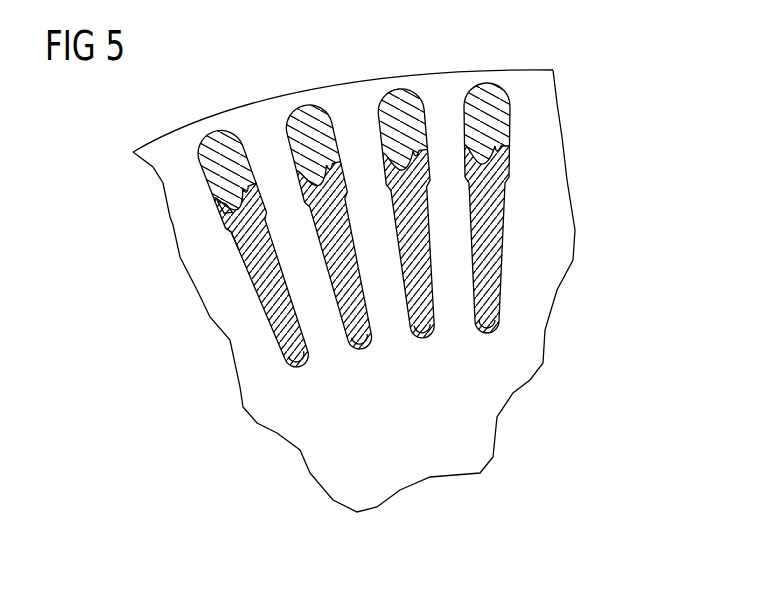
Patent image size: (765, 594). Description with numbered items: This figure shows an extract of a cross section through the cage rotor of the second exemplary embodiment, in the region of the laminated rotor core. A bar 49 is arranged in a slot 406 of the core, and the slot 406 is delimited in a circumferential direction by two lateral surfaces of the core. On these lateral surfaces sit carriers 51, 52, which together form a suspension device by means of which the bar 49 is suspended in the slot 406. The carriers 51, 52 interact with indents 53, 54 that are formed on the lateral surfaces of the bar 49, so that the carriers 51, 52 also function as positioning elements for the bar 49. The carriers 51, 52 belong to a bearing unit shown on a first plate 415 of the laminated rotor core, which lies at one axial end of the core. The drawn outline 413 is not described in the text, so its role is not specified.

The bar 49 is at (267, 285).
The carrier 51 is at (233, 227).
The carrier 52 is at (260, 228).
The indent 53 is at (217, 207).
The indent 54 is at (246, 185).
The slot 406 is at (237, 247).
The stator tooth 413 is at (305, 373).
The first plate 415 is at (500, 363).